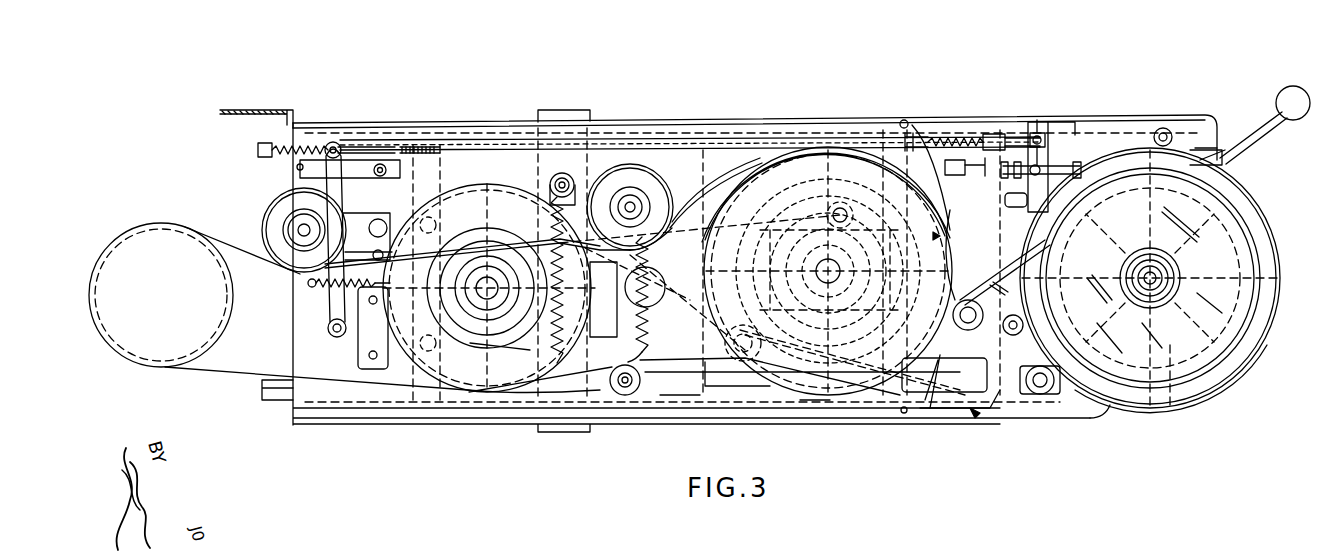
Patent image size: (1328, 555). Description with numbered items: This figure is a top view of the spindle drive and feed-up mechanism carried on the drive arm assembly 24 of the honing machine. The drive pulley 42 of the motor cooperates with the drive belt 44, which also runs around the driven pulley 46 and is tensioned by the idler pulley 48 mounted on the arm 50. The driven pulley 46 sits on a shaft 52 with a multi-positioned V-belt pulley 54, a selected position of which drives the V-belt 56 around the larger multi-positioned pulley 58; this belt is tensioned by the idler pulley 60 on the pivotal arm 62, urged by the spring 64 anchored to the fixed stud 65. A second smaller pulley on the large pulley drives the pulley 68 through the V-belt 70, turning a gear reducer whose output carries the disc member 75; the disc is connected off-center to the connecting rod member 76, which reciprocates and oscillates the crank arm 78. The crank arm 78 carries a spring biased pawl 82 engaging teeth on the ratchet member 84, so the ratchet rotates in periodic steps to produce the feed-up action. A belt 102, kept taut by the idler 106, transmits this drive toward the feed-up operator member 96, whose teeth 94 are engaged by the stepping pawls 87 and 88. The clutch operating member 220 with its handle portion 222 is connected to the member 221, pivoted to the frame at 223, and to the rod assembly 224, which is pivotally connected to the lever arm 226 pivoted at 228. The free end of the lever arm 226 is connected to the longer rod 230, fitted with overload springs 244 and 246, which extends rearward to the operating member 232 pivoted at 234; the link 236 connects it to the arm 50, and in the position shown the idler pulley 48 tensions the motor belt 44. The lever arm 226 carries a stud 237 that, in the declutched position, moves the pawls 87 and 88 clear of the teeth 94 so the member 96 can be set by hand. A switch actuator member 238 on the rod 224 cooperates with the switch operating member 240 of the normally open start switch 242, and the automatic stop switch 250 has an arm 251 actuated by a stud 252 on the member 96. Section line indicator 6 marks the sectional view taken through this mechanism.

The section line indicator 6 is at (940, 236).
The drive arm assembly 24 is at (420, 440).
The drive pulley 42 is at (223, 323).
The drive belt 44 is at (226, 379).
The driven pulley 46 is at (482, 195).
The idler pulley 48 is at (268, 214).
The arm 50 is at (353, 217).
The shaft 52 is at (482, 283).
The multi-positioned V-belt pulley 54 is at (528, 335).
The V-belt 56 is at (712, 207).
The multi-positioned pulley 58 is at (851, 392).
The idler pulley 60 is at (647, 170).
The pivotal arm 62 is at (573, 207).
The spring 64 is at (662, 287).
The fixed stud 65 is at (622, 395).
The pulley 68 is at (800, 331).
The V-belt 70 is at (748, 217).
The disc member 75 is at (698, 402).
The connecting rod member 76 is at (812, 405).
The crank arm 78 is at (1150, 278).
The spring biased pawl 82 is at (964, 269).
The ratchet member 84 is at (852, 362).
The stepping pawl 87 is at (1004, 286).
The stepping pawl 88 is at (1008, 244).
The teeth 94 is at (1100, 216).
The feed-up operator member 96 is at (1253, 353).
The belt 102 is at (828, 271).
The idler 106 is at (932, 205).
The clutch operating member 220 is at (1250, 120).
The member 221 is at (1192, 160).
The handle portion 222 is at (1287, 88).
The pivot means 223 is at (1197, 157).
The rod assembly 224 is at (1060, 162).
The lever arm 226 is at (1058, 160).
The pivot 228 is at (1050, 394).
The rod 230 is at (617, 145).
The operating member 232 is at (334, 178).
The pivot 234 is at (333, 323).
The link 236 is at (352, 328).
The stud 237 is at (1095, 275).
The switch actuator member 238 is at (1003, 167).
The switch operating member 240 is at (967, 165).
The switch 242 is at (940, 227).
The overload spring 244 is at (263, 146).
The overload spring 246 is at (967, 180).
The switch 250 is at (935, 402).
The arm 251 is at (1159, 325).
The stud 252 is at (1175, 410).